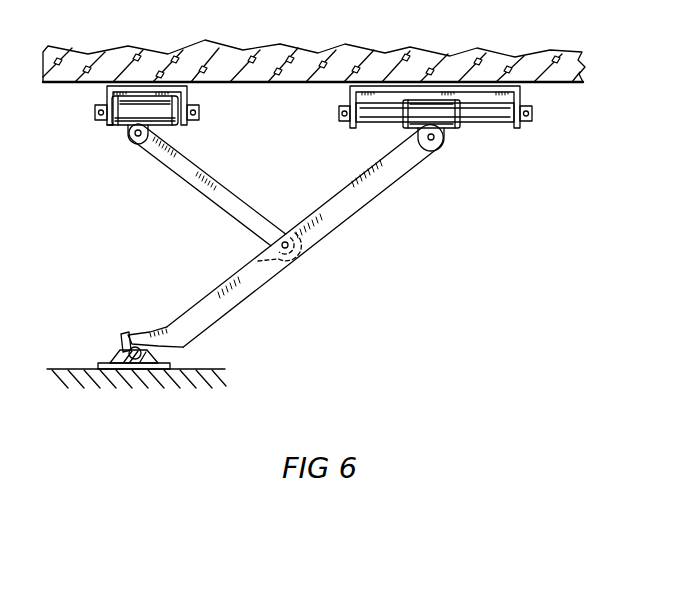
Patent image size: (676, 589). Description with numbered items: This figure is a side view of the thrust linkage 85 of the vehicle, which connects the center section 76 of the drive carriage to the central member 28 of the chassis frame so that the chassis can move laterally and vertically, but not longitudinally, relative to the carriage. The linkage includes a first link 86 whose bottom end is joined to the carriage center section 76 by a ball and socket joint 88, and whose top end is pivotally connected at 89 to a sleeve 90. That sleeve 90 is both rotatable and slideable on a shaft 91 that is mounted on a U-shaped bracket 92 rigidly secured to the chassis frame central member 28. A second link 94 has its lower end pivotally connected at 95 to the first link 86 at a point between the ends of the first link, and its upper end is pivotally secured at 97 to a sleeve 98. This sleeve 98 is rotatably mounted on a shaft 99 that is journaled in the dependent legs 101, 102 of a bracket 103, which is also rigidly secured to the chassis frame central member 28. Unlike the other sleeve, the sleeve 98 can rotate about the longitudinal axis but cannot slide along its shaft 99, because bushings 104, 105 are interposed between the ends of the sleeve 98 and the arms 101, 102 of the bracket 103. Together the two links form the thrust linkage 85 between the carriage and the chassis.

The central member 28 is at (388, 50).
The center section 76 is at (203, 368).
The thrust linkage 85 is at (371, 262).
The link 86 is at (332, 198).
The ball and socket joint 88 is at (118, 358).
The pivotal connection 89 is at (431, 142).
The sleeve 90 is at (450, 132).
The shaft 91 is at (493, 125).
The U-shaped bracket 92 is at (520, 97).
The second link 94 is at (197, 190).
The pivotal connection 95 is at (285, 240).
The pivotal connection 97 is at (137, 139).
The sleeve 98 is at (165, 129).
The shaft 99 is at (199, 111).
The dependent leg 101 is at (107, 131).
The dependent leg 102 is at (183, 126).
The bracket 103 is at (126, 86).
The bushing 104 is at (115, 126).
The bushing 105 is at (178, 101).